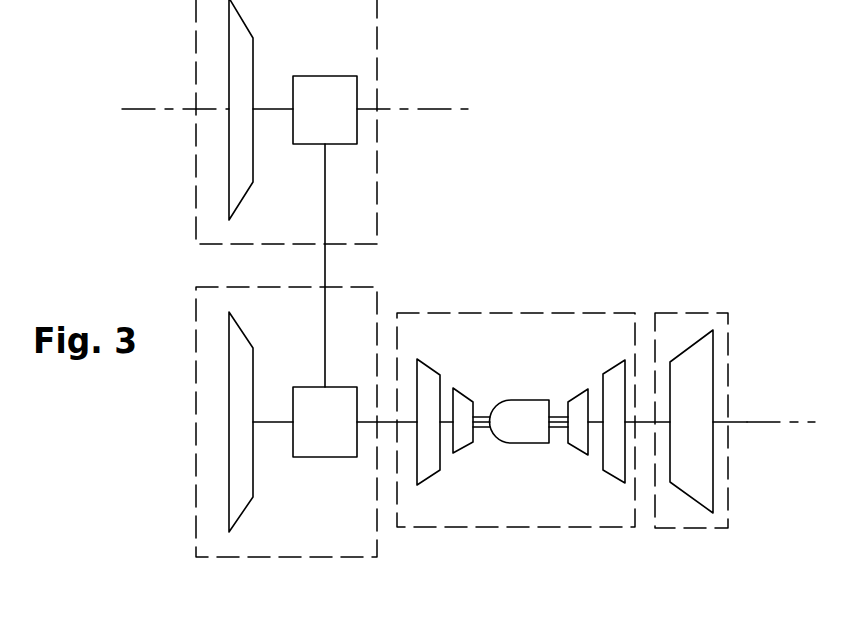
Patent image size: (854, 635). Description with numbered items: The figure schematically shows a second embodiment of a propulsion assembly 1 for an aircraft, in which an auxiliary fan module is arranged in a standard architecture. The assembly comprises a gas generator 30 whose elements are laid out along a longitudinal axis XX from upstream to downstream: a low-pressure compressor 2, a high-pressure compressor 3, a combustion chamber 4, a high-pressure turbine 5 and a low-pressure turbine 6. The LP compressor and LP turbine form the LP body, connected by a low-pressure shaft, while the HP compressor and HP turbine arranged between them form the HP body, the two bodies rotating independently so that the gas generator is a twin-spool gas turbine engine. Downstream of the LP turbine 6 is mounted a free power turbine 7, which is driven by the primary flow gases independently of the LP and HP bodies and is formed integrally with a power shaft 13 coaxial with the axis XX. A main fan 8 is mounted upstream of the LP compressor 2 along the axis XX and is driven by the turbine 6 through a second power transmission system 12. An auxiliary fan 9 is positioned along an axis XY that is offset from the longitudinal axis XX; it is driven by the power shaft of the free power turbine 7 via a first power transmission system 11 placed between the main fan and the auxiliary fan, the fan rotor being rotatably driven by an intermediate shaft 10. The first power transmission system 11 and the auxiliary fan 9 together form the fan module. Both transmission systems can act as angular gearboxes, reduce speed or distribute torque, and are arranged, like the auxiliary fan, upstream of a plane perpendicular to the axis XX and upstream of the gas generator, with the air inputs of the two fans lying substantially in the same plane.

The propulsion assembly 1 is at (578, 167).
The low-pressure compressor 2 is at (430, 378).
The high-pressure compressor 3 is at (462, 407).
The combustion chamber 4 is at (522, 408).
The high-pressure turbine 5 is at (580, 405).
The low-pressure turbine 6 is at (613, 382).
The free power turbine 7 is at (697, 350).
The main fan 8 is at (238, 487).
The auxiliary fan 9 is at (238, 164).
The intermediate shaft 10 is at (326, 266).
The first power transmission system 11 is at (343, 80).
The second power transmission system 12 is at (308, 450).
The power shaft 13 is at (647, 425).
The gas generator 30 is at (550, 487).
The longitudinal axis XX is at (762, 423).
The auxiliary fan axis XY is at (442, 110).